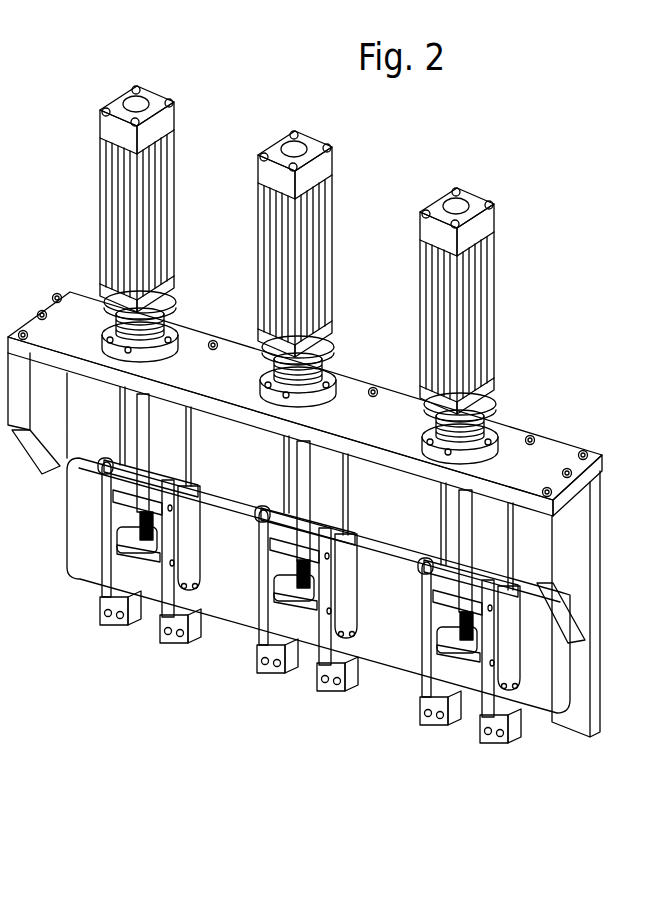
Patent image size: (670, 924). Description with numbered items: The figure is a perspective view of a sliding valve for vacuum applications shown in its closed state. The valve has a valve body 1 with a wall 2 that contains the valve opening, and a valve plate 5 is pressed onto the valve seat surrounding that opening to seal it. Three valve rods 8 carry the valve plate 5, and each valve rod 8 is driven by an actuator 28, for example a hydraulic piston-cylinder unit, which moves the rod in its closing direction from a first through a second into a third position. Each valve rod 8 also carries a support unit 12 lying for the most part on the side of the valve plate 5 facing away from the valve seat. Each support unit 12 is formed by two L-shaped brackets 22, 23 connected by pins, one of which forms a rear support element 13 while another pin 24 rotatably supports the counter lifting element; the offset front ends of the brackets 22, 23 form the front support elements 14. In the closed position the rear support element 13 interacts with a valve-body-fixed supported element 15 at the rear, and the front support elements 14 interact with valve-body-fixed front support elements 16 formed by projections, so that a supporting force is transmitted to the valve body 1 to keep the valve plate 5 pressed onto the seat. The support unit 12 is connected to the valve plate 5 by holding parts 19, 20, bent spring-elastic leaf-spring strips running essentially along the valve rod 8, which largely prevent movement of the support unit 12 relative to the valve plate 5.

The valve body 1 is at (603, 466).
The wall 2 is at (580, 717).
The valve plate 5 is at (227, 603).
The valve rod 8 is at (142, 416).
The support unit 12 is at (100, 570).
The rear support element 13 is at (517, 553).
The front support element 14 is at (507, 713).
The valve-body-fixed supported element 15 is at (483, 570).
The valve-body-fixed support element 16 is at (115, 613).
The holding part 19 is at (515, 626).
The holding part 20 is at (420, 578).
The L-shaped bracket 22 is at (496, 677).
The L-shaped bracket 23 is at (443, 698).
The pin 24 is at (143, 602).
The actuator 28 is at (182, 140).